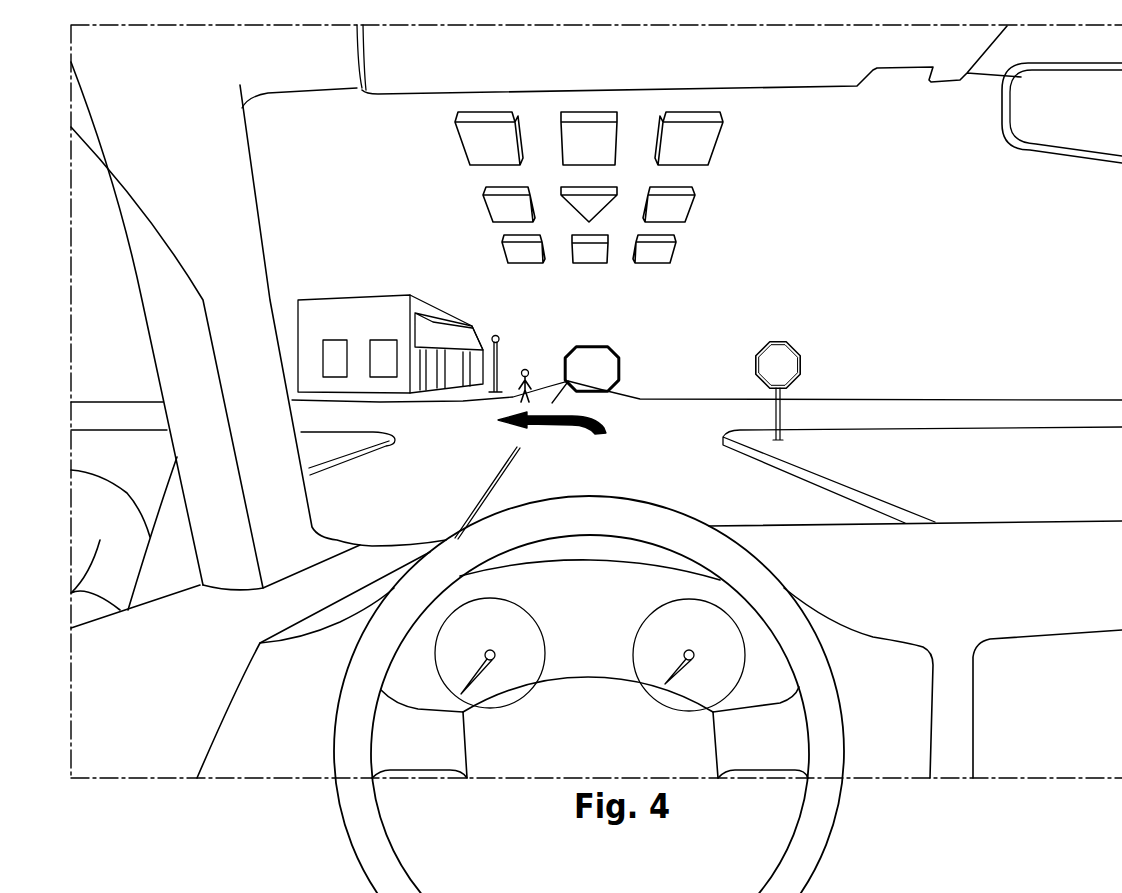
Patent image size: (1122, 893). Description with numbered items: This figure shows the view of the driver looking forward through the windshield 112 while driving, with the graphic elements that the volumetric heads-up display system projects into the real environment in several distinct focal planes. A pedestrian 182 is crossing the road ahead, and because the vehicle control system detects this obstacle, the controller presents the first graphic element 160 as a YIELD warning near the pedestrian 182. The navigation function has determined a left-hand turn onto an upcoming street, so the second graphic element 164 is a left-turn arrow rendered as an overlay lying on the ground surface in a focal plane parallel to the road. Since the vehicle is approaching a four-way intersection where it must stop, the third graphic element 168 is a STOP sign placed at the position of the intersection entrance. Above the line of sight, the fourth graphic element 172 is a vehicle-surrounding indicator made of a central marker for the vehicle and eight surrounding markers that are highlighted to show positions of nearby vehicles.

The windshield 112 is at (897, 289).
The first graphic element 160 is at (508, 352).
The second graphic element 164 is at (618, 409).
The third graphic element 168 is at (624, 347).
The fourth graphic element 172 is at (733, 172).
The pedestrian 182 is at (505, 387).